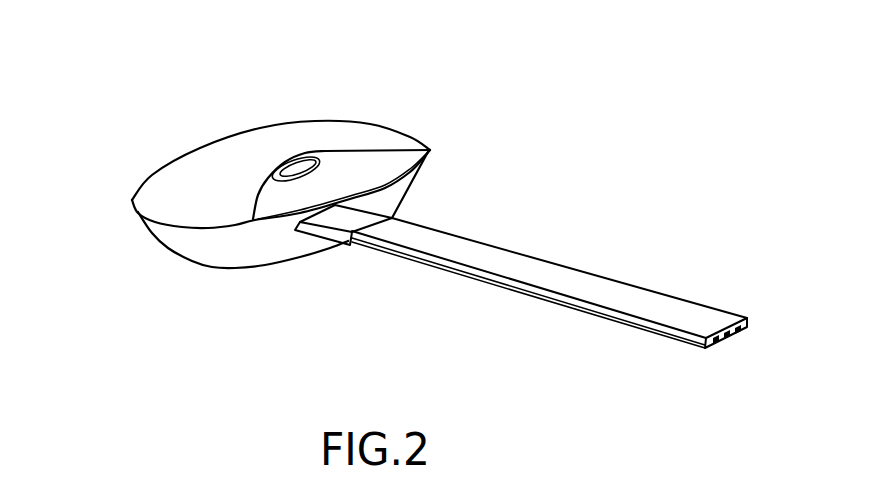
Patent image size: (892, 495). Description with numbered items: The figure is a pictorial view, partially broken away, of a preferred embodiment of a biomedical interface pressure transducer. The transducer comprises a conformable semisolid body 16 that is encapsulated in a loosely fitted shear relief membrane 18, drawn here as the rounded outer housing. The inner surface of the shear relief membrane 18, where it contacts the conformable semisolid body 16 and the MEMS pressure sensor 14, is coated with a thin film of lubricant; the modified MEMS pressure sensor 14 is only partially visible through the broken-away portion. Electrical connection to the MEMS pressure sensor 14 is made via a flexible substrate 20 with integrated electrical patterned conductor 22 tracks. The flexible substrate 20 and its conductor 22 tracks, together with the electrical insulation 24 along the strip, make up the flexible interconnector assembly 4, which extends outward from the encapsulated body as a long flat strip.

The flexible interconnector assembly 4 is at (512, 237).
The MEMS pressure sensor 14 is at (320, 165).
The conformable semisolid body 16 is at (372, 184).
The shear relief membrane 18 is at (187, 176).
The flexible substrate 20 is at (436, 270).
The electrical patterned conductor tracks 22 is at (752, 324).
The electrical insulation 24 is at (600, 278).